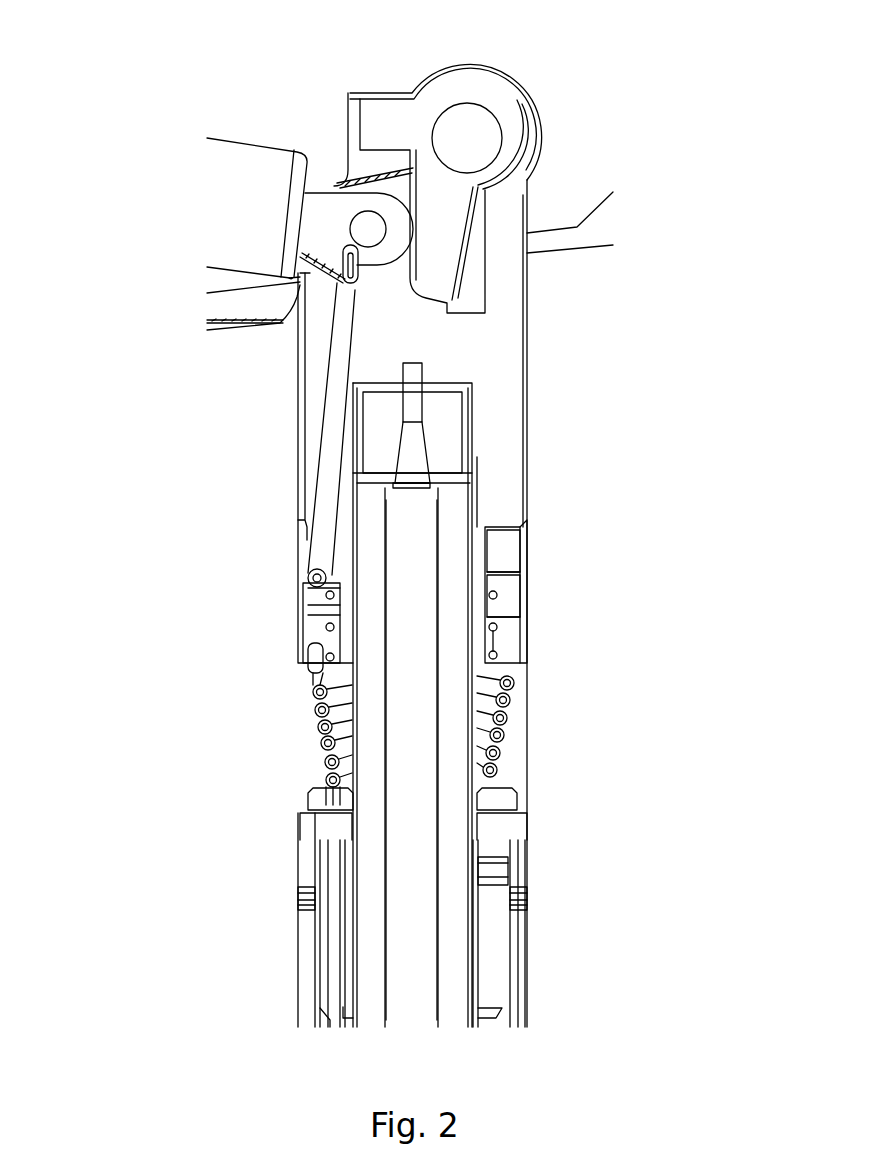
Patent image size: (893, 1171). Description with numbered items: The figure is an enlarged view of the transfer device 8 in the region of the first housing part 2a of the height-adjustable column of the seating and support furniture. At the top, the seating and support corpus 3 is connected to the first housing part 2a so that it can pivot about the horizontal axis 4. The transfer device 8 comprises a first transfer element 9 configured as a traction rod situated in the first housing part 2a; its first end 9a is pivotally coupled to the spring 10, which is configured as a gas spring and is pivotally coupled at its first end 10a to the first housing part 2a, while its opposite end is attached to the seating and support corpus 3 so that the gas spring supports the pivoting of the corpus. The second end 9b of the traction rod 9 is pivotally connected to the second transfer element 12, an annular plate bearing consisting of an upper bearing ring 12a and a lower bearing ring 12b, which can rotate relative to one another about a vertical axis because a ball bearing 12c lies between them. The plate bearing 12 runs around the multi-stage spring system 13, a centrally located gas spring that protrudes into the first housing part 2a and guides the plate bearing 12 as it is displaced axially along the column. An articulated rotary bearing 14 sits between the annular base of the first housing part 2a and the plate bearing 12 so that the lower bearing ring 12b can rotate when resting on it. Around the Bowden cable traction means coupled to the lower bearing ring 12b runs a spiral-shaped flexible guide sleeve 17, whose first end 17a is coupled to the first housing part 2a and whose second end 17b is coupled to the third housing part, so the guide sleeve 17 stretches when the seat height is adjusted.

The first housing part 2a is at (508, 352).
The seating and support corpus 3 is at (567, 240).
The horizontal axis 4 is at (464, 132).
The transfer device 8 is at (278, 758).
The first transfer element 9 is at (333, 422).
The first end of the traction rod 9a is at (342, 280).
The second end of the traction rod 9b is at (317, 575).
The spring 10 is at (240, 173).
The first end of the spring 10a is at (322, 193).
The second transfer element 12 is at (518, 595).
The upper bearing ring 12a is at (502, 582).
The lower bearing ring 12b is at (498, 608).
The ball bearing 12c is at (497, 595).
The multi-stage spring system 13 is at (405, 838).
The articulated rotary bearing 14 is at (493, 647).
The guide sleeve 17 is at (322, 710).
The first end of the guide sleeve 17a is at (300, 663).
The second end of the guide sleeve 17b is at (330, 783).